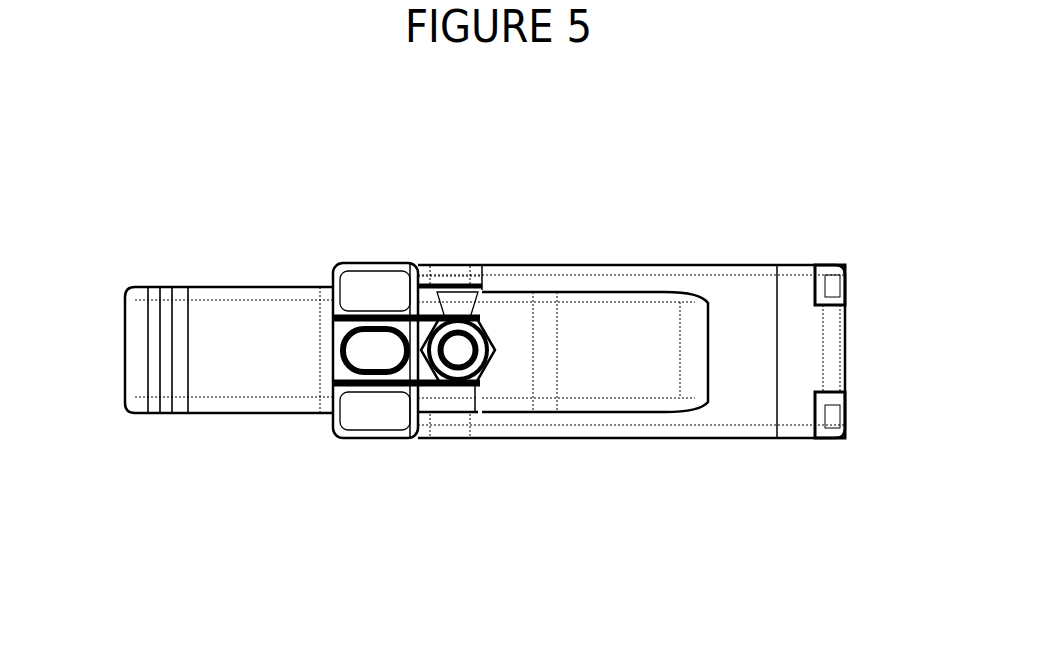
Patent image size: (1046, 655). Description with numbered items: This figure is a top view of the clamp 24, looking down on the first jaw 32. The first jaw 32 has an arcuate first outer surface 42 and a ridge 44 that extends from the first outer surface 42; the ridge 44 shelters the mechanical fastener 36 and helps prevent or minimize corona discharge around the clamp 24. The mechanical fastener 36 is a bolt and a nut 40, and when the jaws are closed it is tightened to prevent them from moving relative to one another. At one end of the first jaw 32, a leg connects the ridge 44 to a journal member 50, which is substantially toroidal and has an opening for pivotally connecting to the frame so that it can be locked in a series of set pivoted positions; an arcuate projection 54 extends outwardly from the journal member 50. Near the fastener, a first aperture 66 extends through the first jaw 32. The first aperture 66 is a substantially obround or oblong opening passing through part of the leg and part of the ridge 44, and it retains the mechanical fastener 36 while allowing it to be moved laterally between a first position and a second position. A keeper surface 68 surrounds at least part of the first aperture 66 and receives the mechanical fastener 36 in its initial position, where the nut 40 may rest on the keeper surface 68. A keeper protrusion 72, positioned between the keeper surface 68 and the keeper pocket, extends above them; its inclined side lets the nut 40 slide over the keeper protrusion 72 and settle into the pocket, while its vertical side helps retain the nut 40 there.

The clamp 24 is at (811, 505).
The first jaw 32 is at (799, 261).
The mechanical fastener 36 is at (483, 325).
The nut 40 is at (450, 318).
The first outer surface 42 is at (773, 340).
The ridge 44 is at (577, 327).
The journal member 50 is at (283, 388).
The arcuate projection 54 is at (152, 390).
The first aperture 66 is at (380, 350).
The keeper surface 68 is at (343, 315).
The keeper protrusion 72 is at (418, 385).